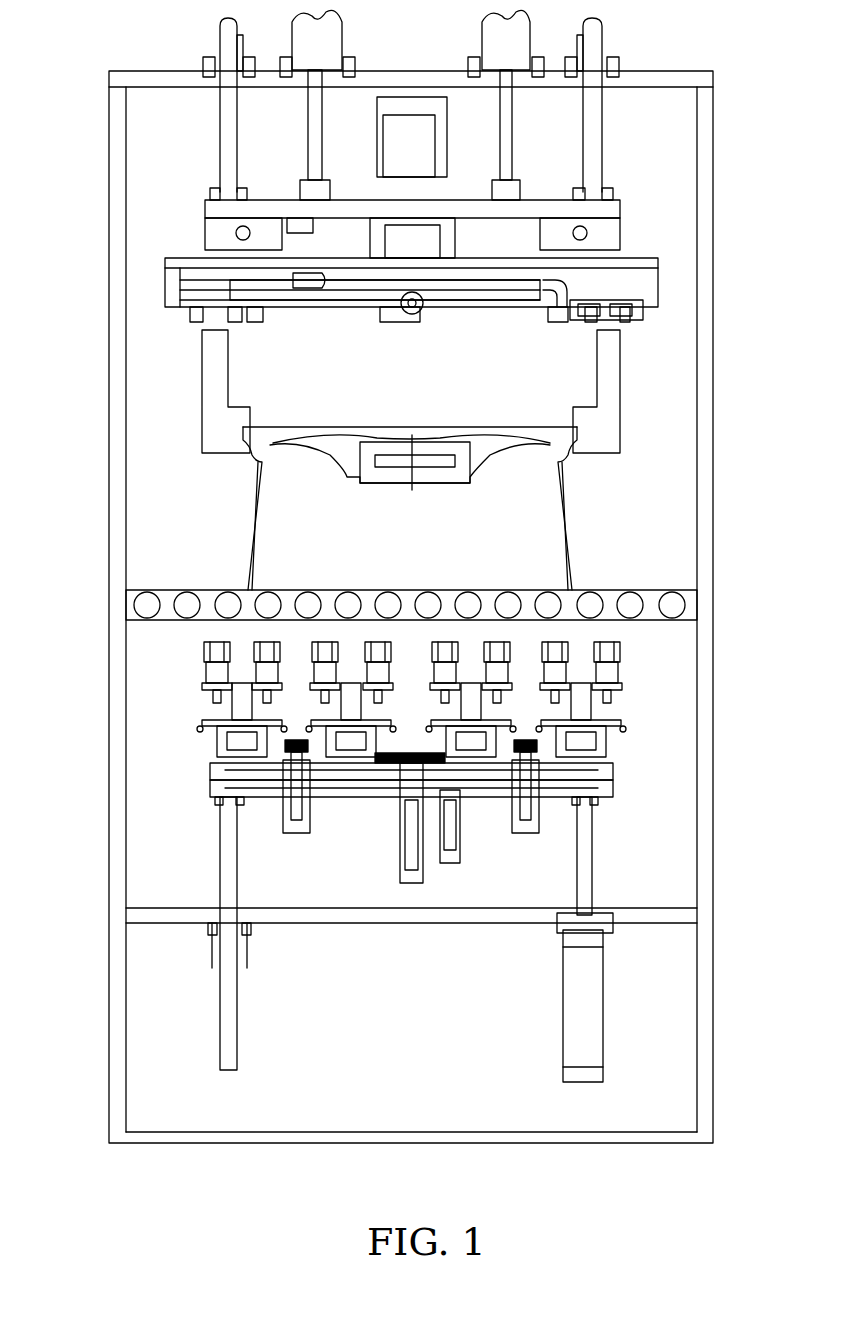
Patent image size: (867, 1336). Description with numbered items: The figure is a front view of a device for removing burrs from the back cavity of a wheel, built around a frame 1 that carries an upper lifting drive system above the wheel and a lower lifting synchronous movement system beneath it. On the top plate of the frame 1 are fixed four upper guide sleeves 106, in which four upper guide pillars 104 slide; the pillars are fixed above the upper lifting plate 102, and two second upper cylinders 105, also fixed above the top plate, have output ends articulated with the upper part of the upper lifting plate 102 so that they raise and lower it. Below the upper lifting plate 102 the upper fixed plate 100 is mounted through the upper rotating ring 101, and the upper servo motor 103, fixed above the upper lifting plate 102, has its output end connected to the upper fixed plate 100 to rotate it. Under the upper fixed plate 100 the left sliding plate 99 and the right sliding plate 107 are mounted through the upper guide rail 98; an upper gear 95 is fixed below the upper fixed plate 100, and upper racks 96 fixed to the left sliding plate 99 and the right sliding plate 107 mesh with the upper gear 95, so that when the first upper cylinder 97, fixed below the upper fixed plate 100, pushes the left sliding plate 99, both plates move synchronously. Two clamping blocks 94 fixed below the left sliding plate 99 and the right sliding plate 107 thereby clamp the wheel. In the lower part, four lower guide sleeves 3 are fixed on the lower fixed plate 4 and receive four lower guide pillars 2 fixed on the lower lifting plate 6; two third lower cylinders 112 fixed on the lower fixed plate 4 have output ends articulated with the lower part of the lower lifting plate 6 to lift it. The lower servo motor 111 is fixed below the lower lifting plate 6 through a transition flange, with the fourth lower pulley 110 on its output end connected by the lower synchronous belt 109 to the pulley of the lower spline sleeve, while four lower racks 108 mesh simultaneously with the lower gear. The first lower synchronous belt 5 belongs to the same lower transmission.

The frame 1 is at (96, 1048).
The lower guide pillar 2 is at (230, 1040).
The lower guide sleeve 3 is at (225, 950).
The lower fixed plate 4 is at (190, 918).
The first lower synchronous belt 5 is at (360, 800).
The lower lifting plate 6 is at (340, 788).
The clamping block 94 is at (400, 310).
The upper gear 95 is at (305, 295).
The upper rack 96 is at (395, 315).
The first upper cylinder 97 is at (240, 322).
The upper guide rail 98 is at (248, 330).
The left sliding plate 99 is at (262, 292).
The upper fixed plate 100 is at (278, 265).
The upper rotating ring 101 is at (283, 228).
The upper lifting plate 102 is at (345, 205).
The upper servo motor 103 is at (405, 153).
The upper guide pillar 104 is at (230, 160).
The second upper cylinder 105 is at (312, 50).
The upper guide sleeve 106 is at (222, 58).
The right sliding plate 107 is at (640, 320).
The lower rack 108 is at (600, 690).
The lower synchronous belt 109 is at (445, 772).
The fourth lower pulley 110 is at (425, 800).
The lower servo motor 111 is at (450, 850).
The third lower cylinder 112 is at (585, 985).